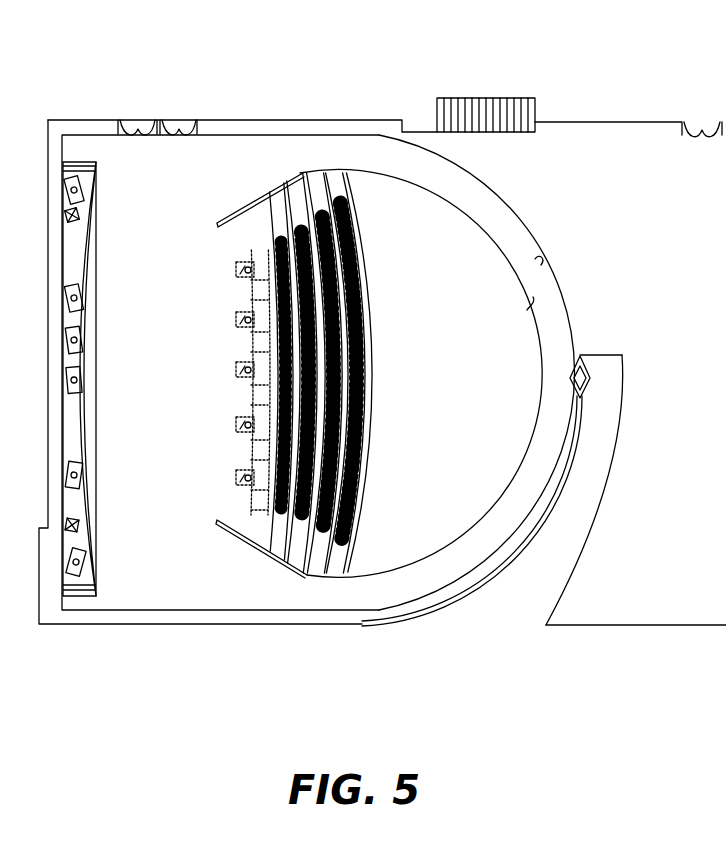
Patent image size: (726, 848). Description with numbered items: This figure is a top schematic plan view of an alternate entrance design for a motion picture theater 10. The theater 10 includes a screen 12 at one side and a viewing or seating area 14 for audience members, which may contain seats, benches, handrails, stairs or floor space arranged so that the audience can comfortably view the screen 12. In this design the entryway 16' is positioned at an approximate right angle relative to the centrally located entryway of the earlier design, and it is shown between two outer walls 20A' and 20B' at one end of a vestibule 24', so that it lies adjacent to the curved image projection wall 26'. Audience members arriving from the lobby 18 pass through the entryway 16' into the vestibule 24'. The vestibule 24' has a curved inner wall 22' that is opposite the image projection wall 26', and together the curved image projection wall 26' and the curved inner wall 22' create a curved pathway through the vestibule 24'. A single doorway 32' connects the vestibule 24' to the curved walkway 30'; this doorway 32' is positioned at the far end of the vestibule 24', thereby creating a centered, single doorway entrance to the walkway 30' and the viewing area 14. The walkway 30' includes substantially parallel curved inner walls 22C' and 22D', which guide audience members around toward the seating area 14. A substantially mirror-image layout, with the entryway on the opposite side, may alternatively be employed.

The motion picture theater 10 is at (377, 63).
The screen 12 is at (98, 308).
The viewing or seating area 14 is at (251, 347).
The entryway 16' is at (488, 667).
The lobby 18 is at (409, 690).
The outer wall 20A' is at (439, 533).
The outer wall 20B' is at (636, 522).
The curved inner wall 22' is at (584, 490).
The curved inner wall 22C' is at (561, 249).
The curved inner wall 22D' is at (498, 331).
The vestibule 24' is at (496, 568).
The curved image projection wall 26' is at (477, 382).
The curved walkway 30' is at (421, 373).
The doorway 32' is at (618, 378).